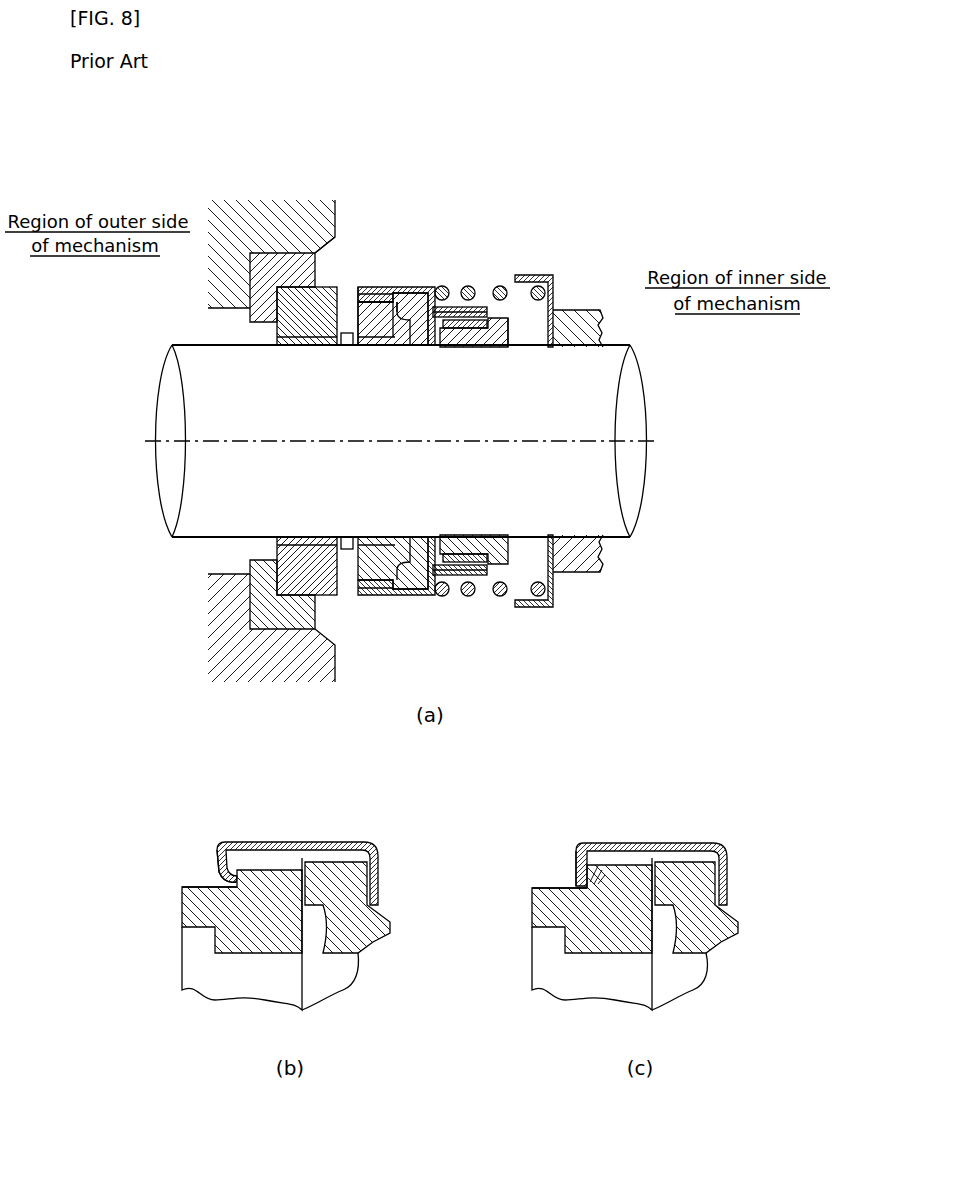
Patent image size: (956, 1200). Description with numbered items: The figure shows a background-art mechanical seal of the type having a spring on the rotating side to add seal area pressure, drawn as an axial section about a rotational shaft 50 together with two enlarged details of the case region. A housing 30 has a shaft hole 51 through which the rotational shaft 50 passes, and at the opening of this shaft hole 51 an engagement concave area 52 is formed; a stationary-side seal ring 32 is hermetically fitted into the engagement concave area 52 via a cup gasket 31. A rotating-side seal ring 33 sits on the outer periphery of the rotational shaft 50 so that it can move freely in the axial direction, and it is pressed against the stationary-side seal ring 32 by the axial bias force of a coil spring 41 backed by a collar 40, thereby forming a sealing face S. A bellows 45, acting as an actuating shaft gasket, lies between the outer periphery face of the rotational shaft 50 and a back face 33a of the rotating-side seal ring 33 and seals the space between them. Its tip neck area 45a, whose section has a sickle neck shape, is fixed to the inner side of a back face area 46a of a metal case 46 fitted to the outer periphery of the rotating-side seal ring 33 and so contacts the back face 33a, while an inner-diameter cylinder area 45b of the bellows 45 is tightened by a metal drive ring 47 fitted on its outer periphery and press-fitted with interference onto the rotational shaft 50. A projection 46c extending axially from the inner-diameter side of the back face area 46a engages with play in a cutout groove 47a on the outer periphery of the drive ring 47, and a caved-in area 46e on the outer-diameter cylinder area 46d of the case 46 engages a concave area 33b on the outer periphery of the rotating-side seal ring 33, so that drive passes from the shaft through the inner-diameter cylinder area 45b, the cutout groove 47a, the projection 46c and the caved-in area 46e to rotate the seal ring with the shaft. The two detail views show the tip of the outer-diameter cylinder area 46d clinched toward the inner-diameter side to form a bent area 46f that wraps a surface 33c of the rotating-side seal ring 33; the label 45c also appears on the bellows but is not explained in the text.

The housing 30 is at (283, 215).
The cup gasket 31 is at (258, 232).
The stationary-side seal ring 32 is at (272, 350).
The rotating-side seal ring 33 is at (358, 340).
The back face 33a is at (398, 332).
The concave area 33b is at (350, 335).
The surface 33c is at (232, 885).
The collar 40 is at (558, 288).
The coil spring 41 is at (513, 272).
The bellows 45 is at (495, 345).
The tip neck area 45a is at (409, 347).
The inner-diameter cylinder area 45b is at (527, 330).
The sleeve end portion 45c is at (404, 345).
The case 46 is at (428, 285).
The back face area 46a is at (447, 288).
The projection 46c is at (486, 298).
The outer-diameter cylinder area 46d is at (396, 283).
The caved-in area 46e is at (352, 282).
The bent area 46f is at (214, 856).
The drive ring 47 is at (458, 335).
The cutout groove 47a is at (455, 325).
The rotational shaft 50 is at (249, 501).
The shaft hole 51 is at (232, 335).
The engagement concave area 52 is at (312, 255).
The sealing face S is at (300, 332).